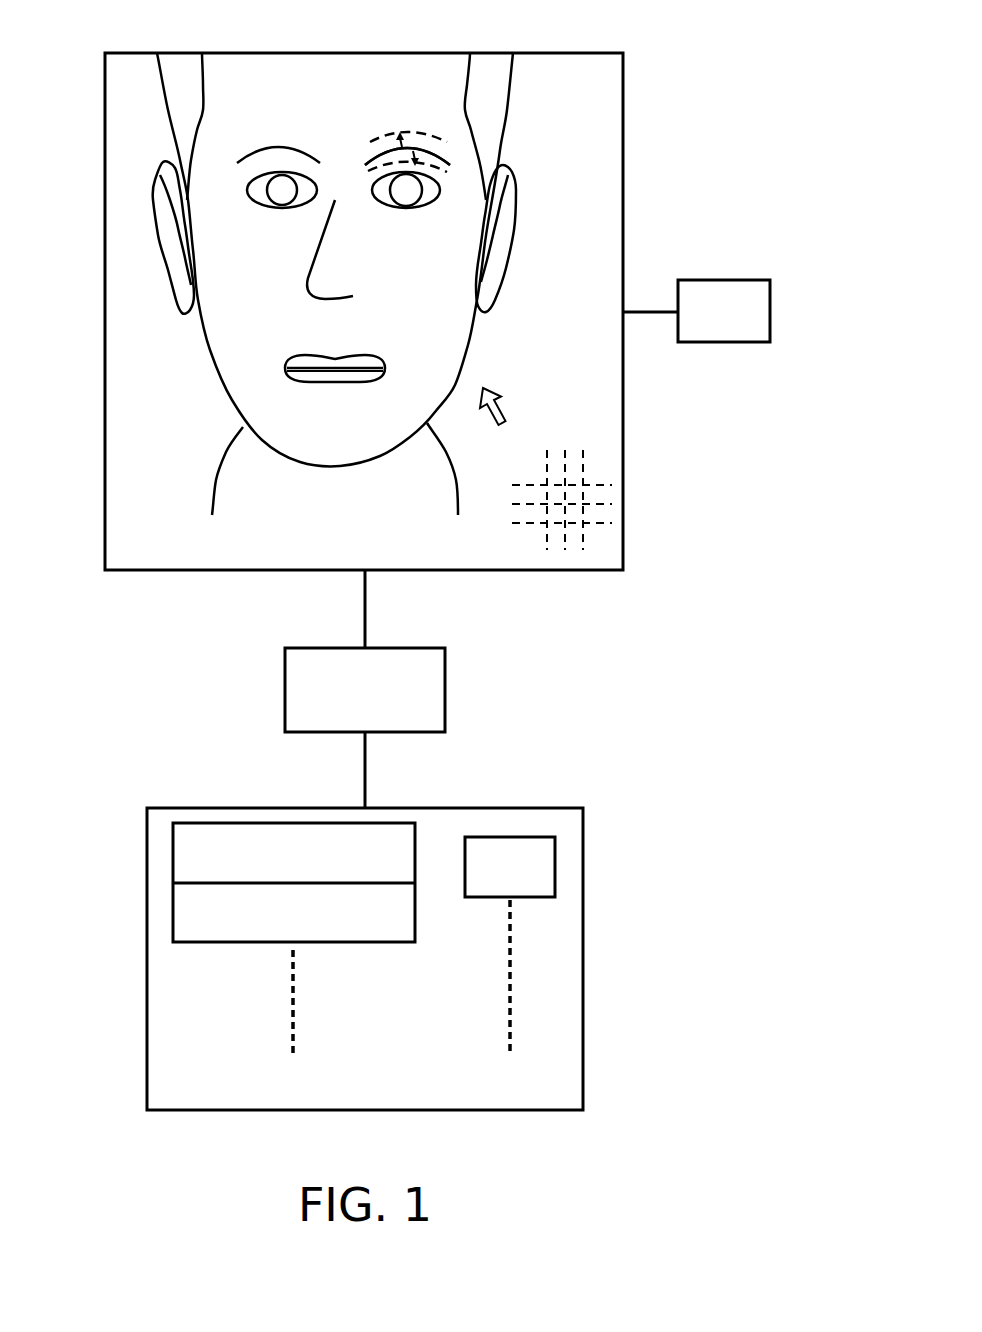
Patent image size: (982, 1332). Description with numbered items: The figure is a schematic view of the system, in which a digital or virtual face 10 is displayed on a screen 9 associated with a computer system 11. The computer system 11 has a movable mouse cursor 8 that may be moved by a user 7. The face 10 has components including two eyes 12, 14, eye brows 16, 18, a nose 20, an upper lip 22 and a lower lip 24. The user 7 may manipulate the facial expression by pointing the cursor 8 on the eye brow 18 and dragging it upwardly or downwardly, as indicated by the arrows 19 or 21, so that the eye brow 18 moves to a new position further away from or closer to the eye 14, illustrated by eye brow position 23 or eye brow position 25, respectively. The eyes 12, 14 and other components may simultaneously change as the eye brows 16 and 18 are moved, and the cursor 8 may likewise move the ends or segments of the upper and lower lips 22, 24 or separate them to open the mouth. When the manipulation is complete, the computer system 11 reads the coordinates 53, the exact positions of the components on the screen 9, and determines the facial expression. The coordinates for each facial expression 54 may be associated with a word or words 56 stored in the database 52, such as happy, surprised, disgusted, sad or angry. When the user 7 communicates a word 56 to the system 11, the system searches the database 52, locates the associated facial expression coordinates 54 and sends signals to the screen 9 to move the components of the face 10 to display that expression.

The user 7 is at (743, 280).
The mouse cursor 8 is at (502, 390).
The screen 9 is at (125, 239).
The virtual face 10 is at (185, 353).
The computer system 11 is at (433, 682).
The eye 12 is at (260, 197).
The eye 14 is at (422, 200).
The eye brow 16 is at (262, 148).
The eye brow 18 is at (368, 163).
The arrow 19 is at (396, 137).
The nose 20 is at (315, 267).
The arrow 21 is at (423, 150).
The upper lip 22 is at (348, 355).
The eye brow position 23 is at (417, 132).
The lower lip 24 is at (318, 381).
The eye brow position 25 is at (432, 168).
The database 52 is at (145, 992).
The coordinates 53 is at (577, 490).
The facial expression coordinates 54 is at (193, 904).
The word 56 is at (542, 847).